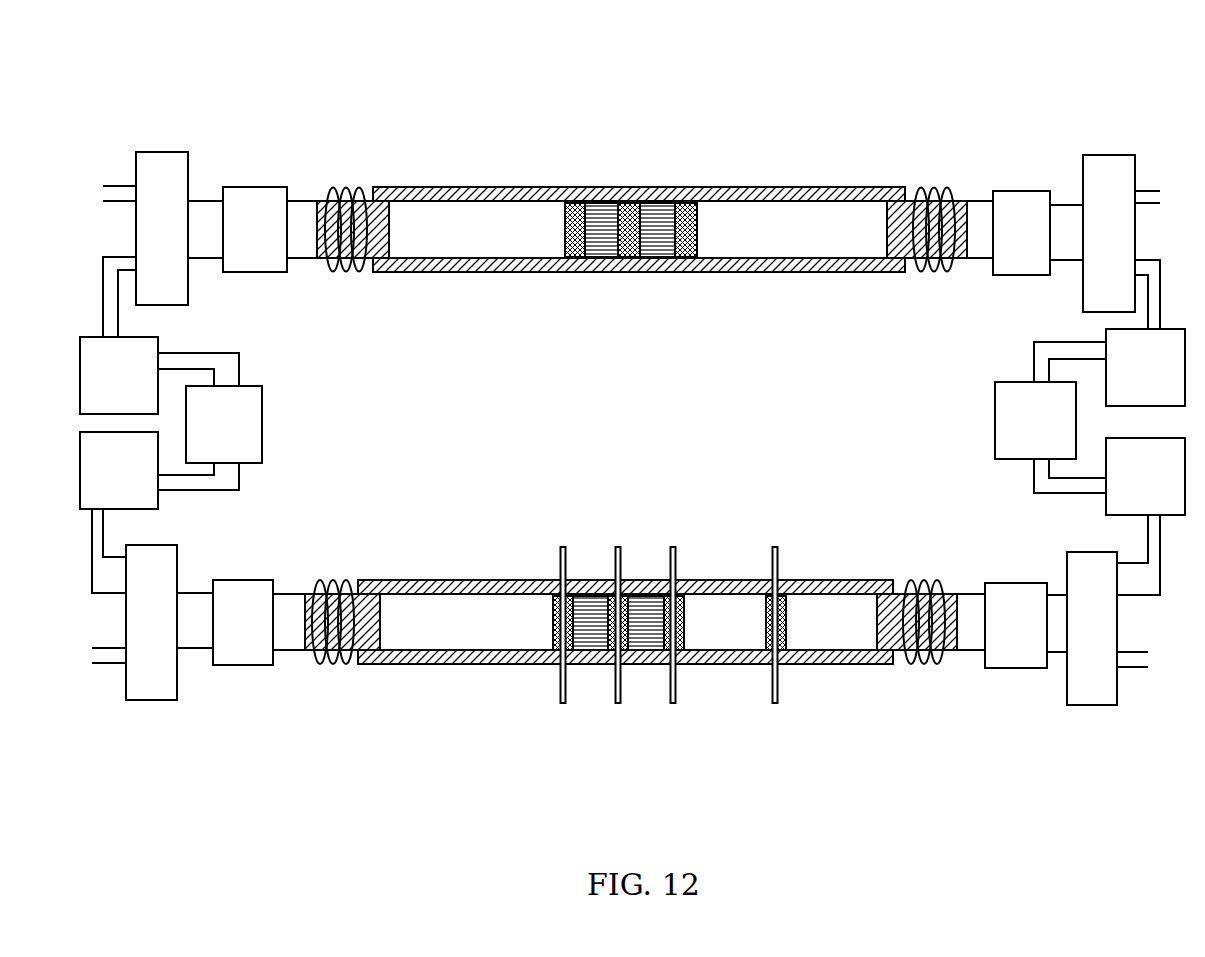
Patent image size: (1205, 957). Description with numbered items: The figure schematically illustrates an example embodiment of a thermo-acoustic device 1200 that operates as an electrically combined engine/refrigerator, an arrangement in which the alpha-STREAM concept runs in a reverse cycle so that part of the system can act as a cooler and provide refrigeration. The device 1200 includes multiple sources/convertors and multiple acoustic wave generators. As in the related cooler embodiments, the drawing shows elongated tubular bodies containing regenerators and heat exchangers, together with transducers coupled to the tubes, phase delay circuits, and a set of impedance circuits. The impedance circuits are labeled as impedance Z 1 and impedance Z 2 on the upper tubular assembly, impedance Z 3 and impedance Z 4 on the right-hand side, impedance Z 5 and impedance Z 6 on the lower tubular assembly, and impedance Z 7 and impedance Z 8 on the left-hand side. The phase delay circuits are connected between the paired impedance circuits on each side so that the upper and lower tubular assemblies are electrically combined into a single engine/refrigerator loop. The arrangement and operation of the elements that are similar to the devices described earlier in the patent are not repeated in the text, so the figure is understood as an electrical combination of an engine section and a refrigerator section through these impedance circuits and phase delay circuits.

The coupled resonator filter circuit 1200 is at (270, 58).
The impedance Z1 1 is at (255, 229).
The impedance Z2 2 is at (1021, 233).
The impedance Z3 3 is at (1145, 367).
The impedance Z4 4 is at (1145, 476).
The impedance Z5 5 is at (1016, 625).
The impedance Z6 6 is at (243, 622).
The impedance Z7 7 is at (119, 470).
The impedance Z8 8 is at (119, 375).